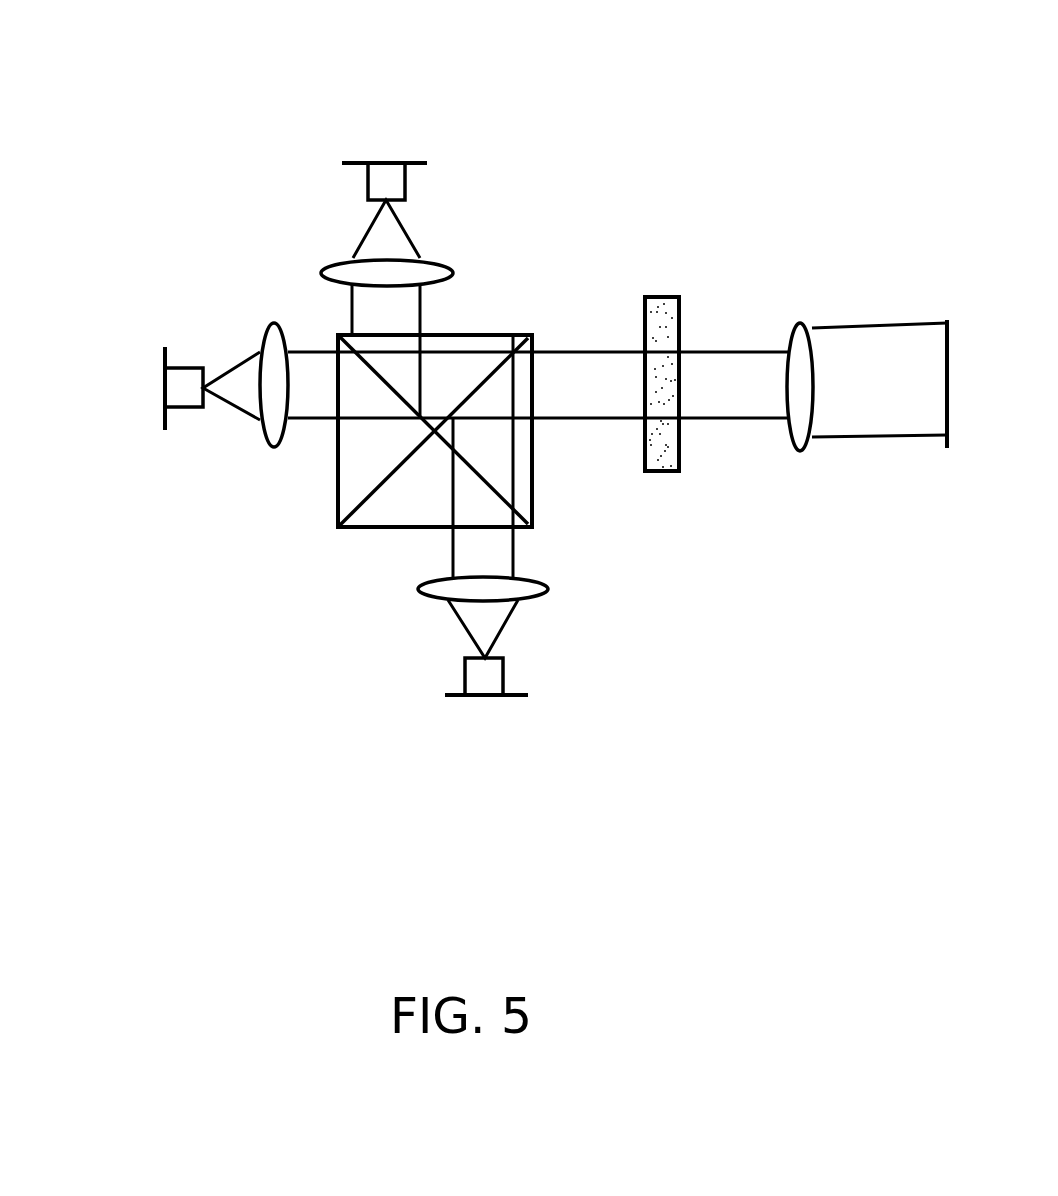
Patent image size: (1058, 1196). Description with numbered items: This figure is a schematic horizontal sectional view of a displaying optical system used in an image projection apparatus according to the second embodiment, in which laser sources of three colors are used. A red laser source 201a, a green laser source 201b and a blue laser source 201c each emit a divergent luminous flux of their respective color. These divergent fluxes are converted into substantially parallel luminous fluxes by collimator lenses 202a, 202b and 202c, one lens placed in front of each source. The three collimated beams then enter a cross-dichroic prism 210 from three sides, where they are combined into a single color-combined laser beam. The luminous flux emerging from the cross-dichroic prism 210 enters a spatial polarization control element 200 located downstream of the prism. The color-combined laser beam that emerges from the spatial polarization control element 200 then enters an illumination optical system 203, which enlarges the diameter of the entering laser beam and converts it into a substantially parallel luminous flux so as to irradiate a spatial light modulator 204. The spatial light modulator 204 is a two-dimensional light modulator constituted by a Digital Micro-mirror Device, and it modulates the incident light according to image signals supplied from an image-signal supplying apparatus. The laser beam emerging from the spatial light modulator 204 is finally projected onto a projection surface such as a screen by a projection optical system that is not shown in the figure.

The red laser source 201a is at (398, 150).
The green laser source 201b is at (149, 414).
The blue laser source 201c is at (489, 712).
The collimator lens 202a is at (321, 249).
The collimator lens 202b is at (269, 458).
The collimator lens 202c is at (427, 613).
The cross-dichroic prism 210 is at (491, 316).
The spatial polarization control element 200 is at (661, 490).
The illumination optical system 203 is at (787, 305).
The spatial light modulator 204 is at (944, 310).